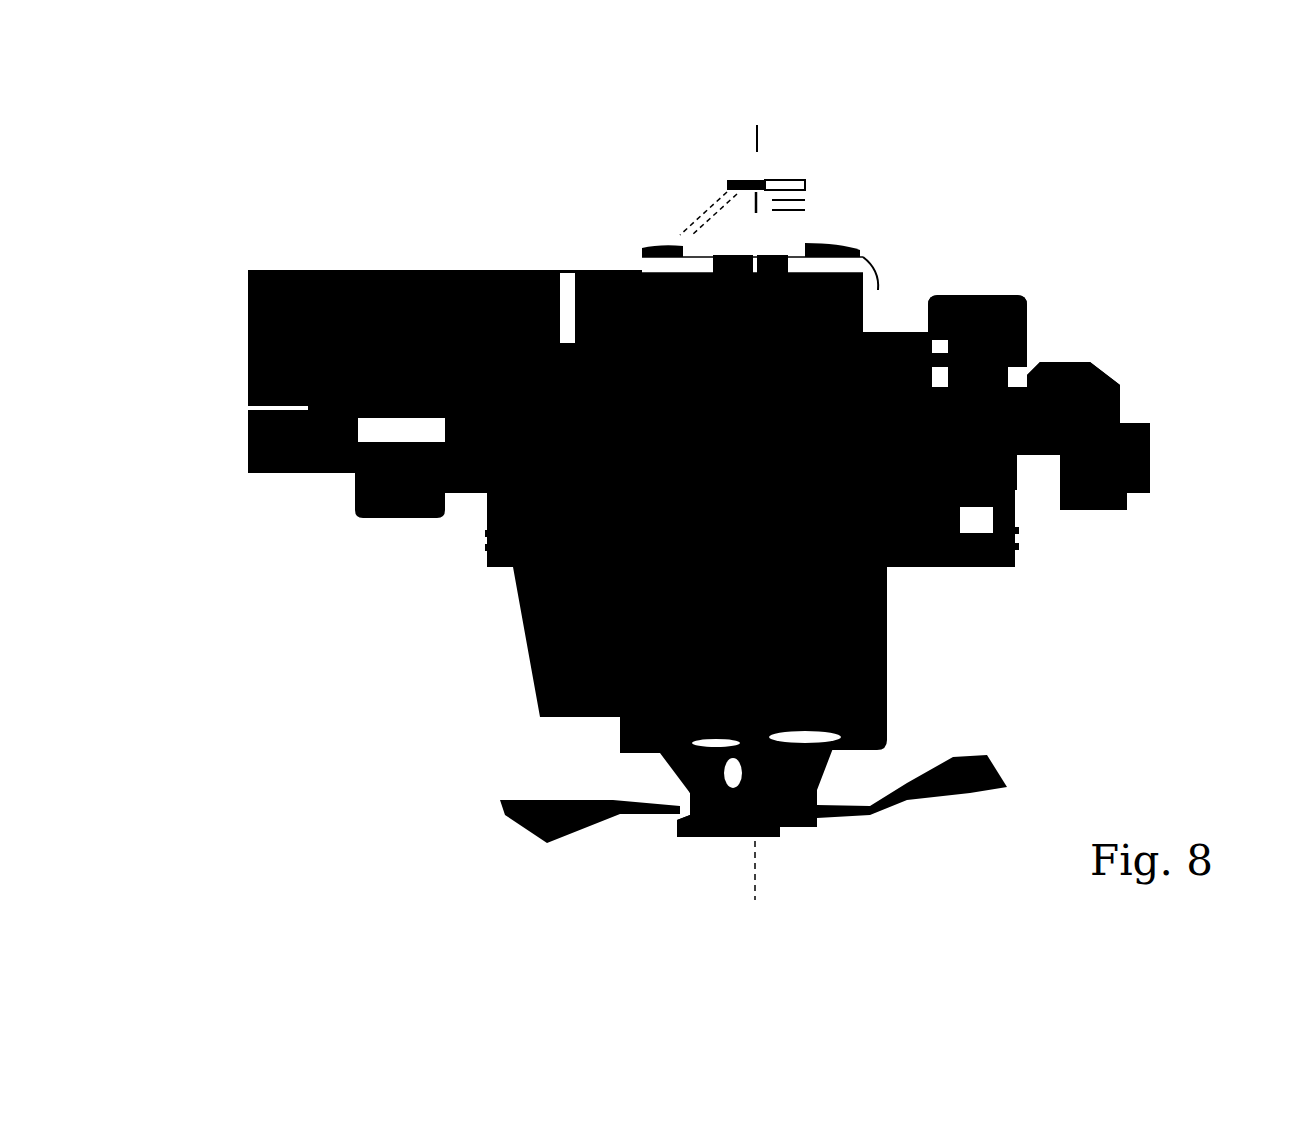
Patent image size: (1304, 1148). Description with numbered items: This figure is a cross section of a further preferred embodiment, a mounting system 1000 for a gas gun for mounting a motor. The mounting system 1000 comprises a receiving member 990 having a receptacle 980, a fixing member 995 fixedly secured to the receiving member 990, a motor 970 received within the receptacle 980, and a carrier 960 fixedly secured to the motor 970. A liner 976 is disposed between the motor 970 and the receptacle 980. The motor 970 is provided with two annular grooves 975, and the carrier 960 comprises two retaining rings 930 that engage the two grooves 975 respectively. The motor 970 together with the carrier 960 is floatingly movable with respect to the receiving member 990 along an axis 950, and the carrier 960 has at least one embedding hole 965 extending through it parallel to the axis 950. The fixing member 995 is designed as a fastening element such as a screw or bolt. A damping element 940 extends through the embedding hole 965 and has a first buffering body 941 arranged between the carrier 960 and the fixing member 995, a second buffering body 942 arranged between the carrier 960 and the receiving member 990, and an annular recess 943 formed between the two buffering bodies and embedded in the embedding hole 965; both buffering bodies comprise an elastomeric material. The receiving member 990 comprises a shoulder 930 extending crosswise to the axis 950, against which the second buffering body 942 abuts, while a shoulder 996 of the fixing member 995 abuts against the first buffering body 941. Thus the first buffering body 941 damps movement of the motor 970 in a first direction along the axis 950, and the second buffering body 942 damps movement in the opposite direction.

The mounting system 1000 is at (350, 190).
The axis 950 is at (758, 132).
The annular grooves 975 is at (873, 333).
The retaining rings / shoulder 930 is at (877, 337).
The carrier 960 is at (903, 338).
The shoulder 996 is at (980, 293).
The fixing member 995 is at (1025, 297).
The embedding hole 965 is at (1020, 337).
The first buffering body 941 is at (1017, 353).
The second buffering body 942 is at (1060, 378).
The damping element 940 is at (1017, 380).
The annular recess 943 is at (1017, 550).
The liner 976 is at (863, 567).
The receiving member 990 is at (910, 557).
The receptacle 980 is at (863, 640).
The motor 970 is at (643, 598).